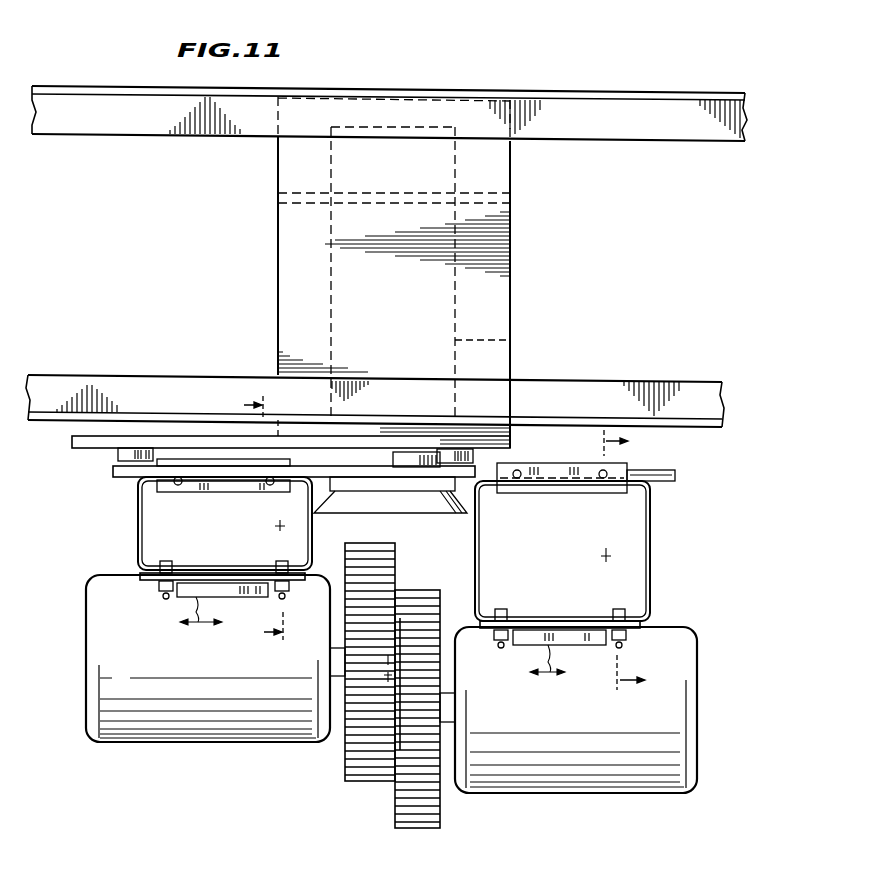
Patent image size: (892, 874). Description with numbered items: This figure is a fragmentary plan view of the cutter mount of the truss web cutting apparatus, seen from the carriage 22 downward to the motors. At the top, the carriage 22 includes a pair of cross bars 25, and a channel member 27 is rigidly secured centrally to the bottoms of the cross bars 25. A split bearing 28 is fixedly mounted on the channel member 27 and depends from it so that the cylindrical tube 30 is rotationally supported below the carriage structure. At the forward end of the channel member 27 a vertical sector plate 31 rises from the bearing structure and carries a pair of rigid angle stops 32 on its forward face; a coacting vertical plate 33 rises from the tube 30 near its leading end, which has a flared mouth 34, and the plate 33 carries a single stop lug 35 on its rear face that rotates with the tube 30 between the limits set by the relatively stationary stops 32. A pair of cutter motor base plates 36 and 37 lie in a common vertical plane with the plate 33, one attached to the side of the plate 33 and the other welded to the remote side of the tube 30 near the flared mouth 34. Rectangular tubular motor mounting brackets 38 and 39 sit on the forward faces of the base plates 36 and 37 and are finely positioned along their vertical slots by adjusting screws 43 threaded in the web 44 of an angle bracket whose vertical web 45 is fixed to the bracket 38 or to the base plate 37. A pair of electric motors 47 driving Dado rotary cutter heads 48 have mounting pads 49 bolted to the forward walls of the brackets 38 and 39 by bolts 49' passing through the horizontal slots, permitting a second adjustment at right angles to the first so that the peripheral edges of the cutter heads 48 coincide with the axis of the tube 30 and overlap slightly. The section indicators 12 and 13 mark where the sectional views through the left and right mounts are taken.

The carriage 22 is at (661, 93).
The cross bars 25 is at (148, 134).
The channel member 27 is at (512, 284).
The split bearing 28 is at (512, 200).
The cylindrical tube 30 is at (512, 339).
The vertical sector plate 31 is at (392, 442).
The angle stops 32 is at (138, 448).
The vertical plate 33 is at (392, 470).
The flared mouth 34 is at (356, 500).
The stop lug 35 is at (415, 455).
The cutter motor base plate 36 is at (678, 476).
The cutter motor base plate 37 is at (122, 474).
The tubular motor mounting bracket 38 is at (652, 556).
The tubular motor mounting bracket 39 is at (138, 532).
The adjusting screws 43 is at (178, 487).
The web of angle bracket 44 is at (200, 492).
The vertical web of angle bracket 45 is at (250, 461).
The electric motors 47 is at (232, 742).
The Dado rotary cutter heads 48 is at (398, 800).
The mounting pads 49 is at (373, 641).
The bolts 49' is at (363, 608).
The section line 12 is at (246, 519).
The section line 13 is at (641, 562).